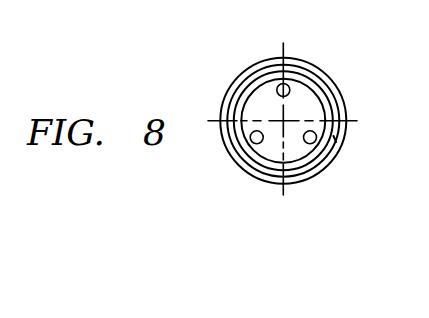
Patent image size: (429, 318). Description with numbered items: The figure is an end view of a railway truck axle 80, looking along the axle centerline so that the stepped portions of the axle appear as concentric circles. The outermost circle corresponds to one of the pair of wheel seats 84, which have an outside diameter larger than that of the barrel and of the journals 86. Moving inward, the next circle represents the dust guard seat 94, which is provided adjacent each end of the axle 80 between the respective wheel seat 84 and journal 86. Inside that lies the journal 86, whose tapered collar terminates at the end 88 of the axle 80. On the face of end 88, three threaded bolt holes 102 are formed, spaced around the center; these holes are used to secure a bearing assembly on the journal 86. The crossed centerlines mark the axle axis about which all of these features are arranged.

The axle 80 is at (196, 50).
The wheel seats 84 is at (300, 60).
The journals 86 is at (331, 112).
The end 88 is at (244, 105).
The dust guard seat 94 is at (337, 138).
The threaded bolt holes 102 is at (278, 84).